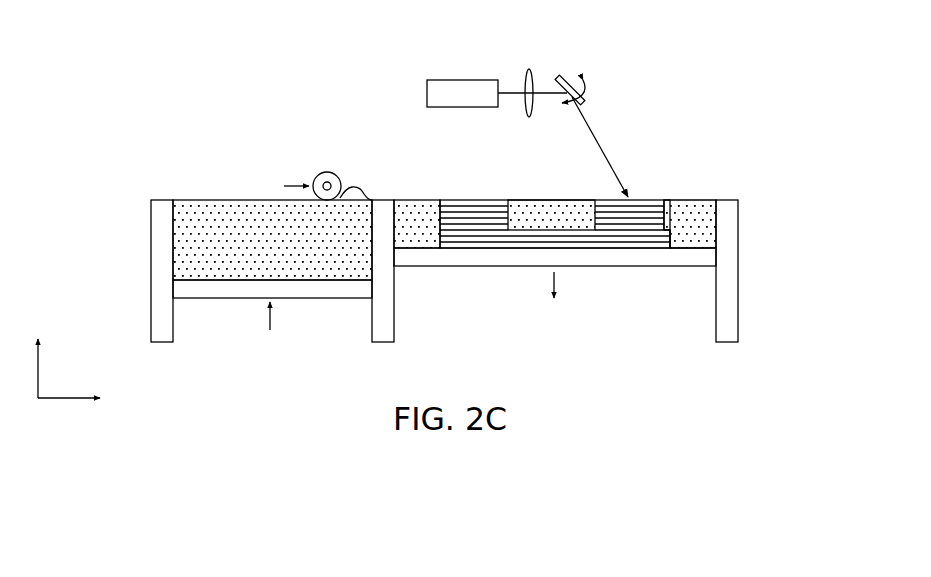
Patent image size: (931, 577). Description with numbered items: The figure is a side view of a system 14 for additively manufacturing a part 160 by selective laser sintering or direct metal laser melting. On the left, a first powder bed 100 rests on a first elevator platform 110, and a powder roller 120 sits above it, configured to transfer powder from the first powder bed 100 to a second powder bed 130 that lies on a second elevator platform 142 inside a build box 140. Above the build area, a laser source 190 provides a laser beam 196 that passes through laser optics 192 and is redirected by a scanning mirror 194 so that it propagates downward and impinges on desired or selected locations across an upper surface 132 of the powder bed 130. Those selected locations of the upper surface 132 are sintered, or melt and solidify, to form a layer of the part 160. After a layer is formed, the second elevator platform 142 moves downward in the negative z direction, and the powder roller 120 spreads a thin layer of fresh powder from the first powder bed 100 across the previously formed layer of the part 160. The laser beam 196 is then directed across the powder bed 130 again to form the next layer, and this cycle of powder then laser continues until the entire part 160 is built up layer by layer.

The system 14 is at (730, 70).
The first powder bed 100 is at (207, 196).
The first elevator platform 110 is at (198, 302).
The powder roller 120 is at (323, 168).
The second powder bed 130 is at (409, 196).
The upper surface 132 is at (474, 199).
The build box 140 is at (745, 200).
The second elevator platform 142 is at (698, 274).
The part 160 is at (673, 196).
The laser source 190 is at (437, 77).
The laser optics 192 is at (529, 68).
The scanning mirror 194 is at (567, 78).
The laser beam 196 is at (598, 137).